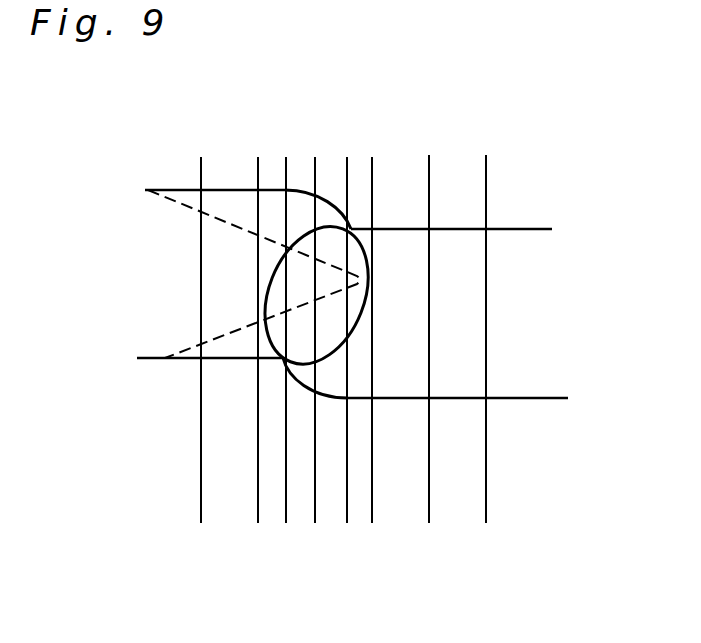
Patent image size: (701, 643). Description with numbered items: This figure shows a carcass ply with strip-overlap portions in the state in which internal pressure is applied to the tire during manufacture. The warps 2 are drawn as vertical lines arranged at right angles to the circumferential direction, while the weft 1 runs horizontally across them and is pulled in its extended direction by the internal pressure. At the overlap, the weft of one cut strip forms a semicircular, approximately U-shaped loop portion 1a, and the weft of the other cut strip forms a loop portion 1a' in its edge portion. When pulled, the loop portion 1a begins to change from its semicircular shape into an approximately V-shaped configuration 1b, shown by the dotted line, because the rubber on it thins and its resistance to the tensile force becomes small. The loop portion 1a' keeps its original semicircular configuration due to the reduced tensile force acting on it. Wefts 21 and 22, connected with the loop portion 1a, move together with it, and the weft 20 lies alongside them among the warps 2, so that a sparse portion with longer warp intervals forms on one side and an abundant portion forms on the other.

The weft 1 is at (221, 190).
The loop portion 1a is at (332, 159).
The loop portion 1a' is at (304, 492).
The V-shaped configuration 1b is at (238, 227).
The warps 2 is at (430, 176).
The weft yarn 20 is at (347, 514).
The weft 21 is at (315, 516).
The weft 22 is at (285, 517).